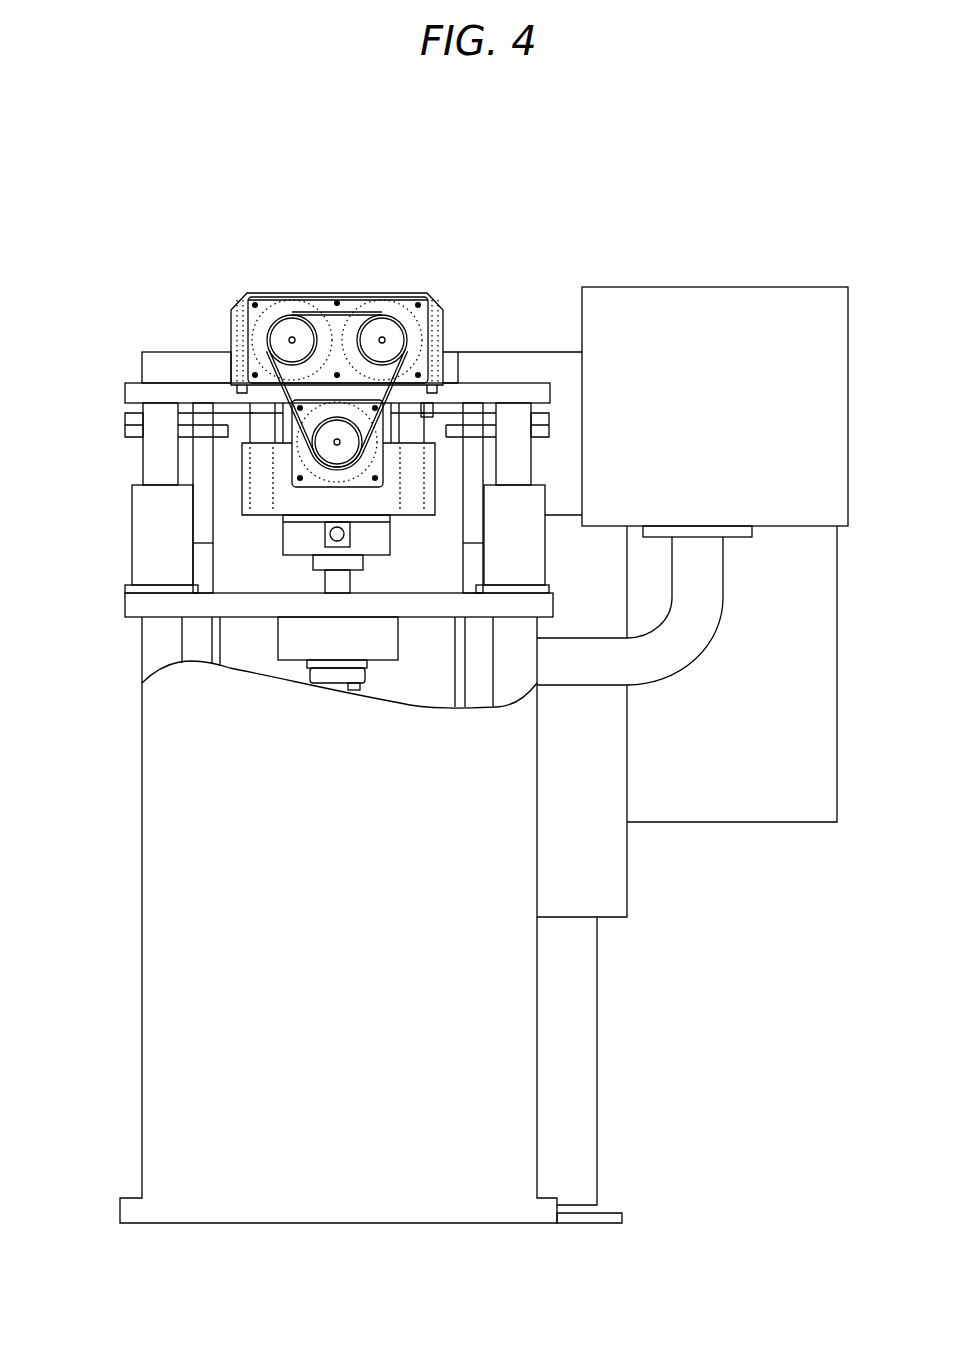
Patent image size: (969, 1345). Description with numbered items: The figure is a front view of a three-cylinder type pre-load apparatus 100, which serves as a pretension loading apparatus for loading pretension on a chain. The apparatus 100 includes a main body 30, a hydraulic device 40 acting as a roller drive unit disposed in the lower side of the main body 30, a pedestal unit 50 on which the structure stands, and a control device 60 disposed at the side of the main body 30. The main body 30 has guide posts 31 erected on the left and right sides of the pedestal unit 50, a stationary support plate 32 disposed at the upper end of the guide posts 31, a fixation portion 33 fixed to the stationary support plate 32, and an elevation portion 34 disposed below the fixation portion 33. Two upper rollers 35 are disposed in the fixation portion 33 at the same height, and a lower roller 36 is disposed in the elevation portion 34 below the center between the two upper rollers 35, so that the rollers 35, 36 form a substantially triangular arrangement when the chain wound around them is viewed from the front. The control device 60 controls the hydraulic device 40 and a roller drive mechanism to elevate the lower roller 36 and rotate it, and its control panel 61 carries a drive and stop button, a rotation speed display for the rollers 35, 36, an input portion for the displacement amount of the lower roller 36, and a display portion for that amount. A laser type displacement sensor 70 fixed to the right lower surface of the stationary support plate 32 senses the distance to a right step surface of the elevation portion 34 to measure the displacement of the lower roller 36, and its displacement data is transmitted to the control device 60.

The three-cylinder type pre-load apparatus 100 is at (210, 208).
The main body 30 is at (210, 323).
The guide post 31 is at (262, 427).
The stationary support plate 32 is at (517, 392).
The fixation portion 33 is at (443, 308).
The elevation portion 34 is at (242, 476).
The upper rollers 35 is at (382, 336).
The lower roller 36 is at (330, 452).
The hydraulic device 40 is at (308, 582).
The pedestal unit 50 is at (142, 915).
The control device 60 is at (764, 558).
The control panel 61 is at (778, 307).
The laser type displacement sensor 70 is at (447, 403).